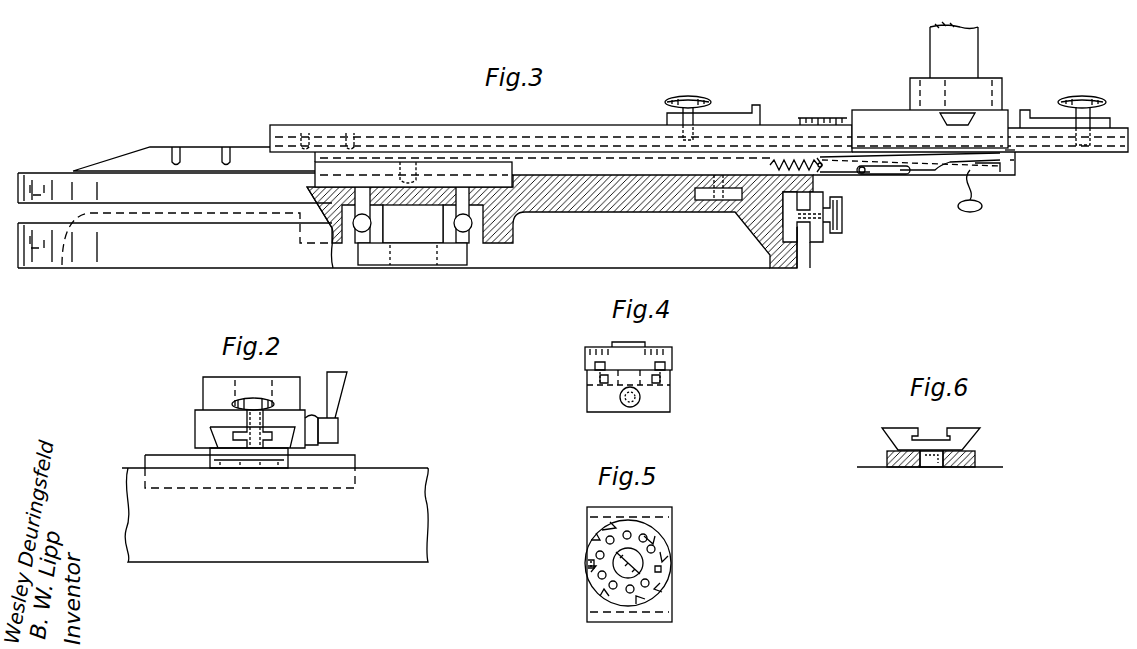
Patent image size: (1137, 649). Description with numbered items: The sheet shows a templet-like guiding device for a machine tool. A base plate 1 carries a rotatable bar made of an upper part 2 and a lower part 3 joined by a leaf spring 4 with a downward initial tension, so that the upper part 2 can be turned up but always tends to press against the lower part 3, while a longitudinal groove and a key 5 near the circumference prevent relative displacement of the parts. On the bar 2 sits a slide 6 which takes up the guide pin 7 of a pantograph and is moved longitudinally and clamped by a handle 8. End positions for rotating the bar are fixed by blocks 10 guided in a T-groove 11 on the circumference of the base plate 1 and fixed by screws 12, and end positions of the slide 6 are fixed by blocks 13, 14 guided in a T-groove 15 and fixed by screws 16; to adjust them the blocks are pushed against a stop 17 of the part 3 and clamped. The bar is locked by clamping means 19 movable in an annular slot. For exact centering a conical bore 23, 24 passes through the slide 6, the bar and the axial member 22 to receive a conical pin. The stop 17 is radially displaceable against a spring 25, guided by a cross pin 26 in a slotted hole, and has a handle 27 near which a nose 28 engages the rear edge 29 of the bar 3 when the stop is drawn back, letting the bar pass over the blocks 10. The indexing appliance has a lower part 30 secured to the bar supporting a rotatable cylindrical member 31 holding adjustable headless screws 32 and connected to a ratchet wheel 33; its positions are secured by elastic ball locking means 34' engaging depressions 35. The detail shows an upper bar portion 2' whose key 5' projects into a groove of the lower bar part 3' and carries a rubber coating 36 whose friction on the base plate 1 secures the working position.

In FIG. 3, the base plate 1 is at (618, 212).
In FIG. 3, the upper part of the bar 2 is at (697, 125).
In FIG. 2, the upper part of the bar 2 is at (238, 429).
In FIG. 3, the lower part of the bar 3 is at (665, 137).
In FIG. 2, the lower part of the bar 3 is at (250, 487).
In FIG. 3, the leaf spring 4 is at (200, 146).
In FIG. 2, the key 5 is at (249, 482).
In FIG. 3, the slide 6 is at (993, 118).
In FIG. 2, the slide 6 is at (290, 382).
In FIG. 3, the guide pin 7 is at (978, 76).
In FIG. 2, the handle 8 is at (342, 384).
In FIG. 3, the blocks 10 is at (815, 242).
In FIG. 3, the T-groove 11 is at (802, 235).
In FIG. 3, the screws 12 is at (842, 225).
In FIG. 3, the block 13 is at (758, 112).
In FIG. 3, the block 14 is at (1032, 116).
In FIG. 2, the T-groove 15 is at (270, 436).
In FIG. 2, the screws 16 is at (236, 402).
In FIG. 3, the stop 17 is at (842, 178).
In FIG. 3, the clamping means 19 is at (712, 200).
In FIG. 3, the axial member 22 is at (328, 180).
In FIG. 3, the bore 23 is at (957, 120).
In FIG. 3, the bore 24 is at (425, 170).
In FIG. 3, the spring 25 is at (786, 160).
In FIG. 3, the cross pin 26 is at (872, 175).
In FIG. 3, the handle 27 is at (976, 211).
In FIG. 3, the nose 28 is at (990, 170).
In FIG. 3, the rear edge 29 is at (1018, 152).
In FIG. 4, the lower part 30 is at (664, 405).
In FIG. 5, the lower part 30 is at (668, 525).
In FIG. 4, the cylindrical member 31 is at (672, 352).
In FIG. 4, the headless screws 32 is at (665, 366).
In FIG. 5, the headless screws 32 is at (590, 574).
In FIG. 4, the ratchet wheel 33 is at (645, 345).
In FIG. 5, the ratchet wheel 33 is at (664, 550).
In FIG. 4, the elastic ball locking means 34' is at (659, 390).
In FIG. 5, the depressions 35 is at (660, 590).
In FIG. 6, the upper bar portion 2' is at (940, 436).
In FIG. 6, the lower bar part 3' is at (971, 457).
In FIG. 6, the key 5' is at (884, 473).
In FIG. 6, the rubber coating 36 is at (932, 467).